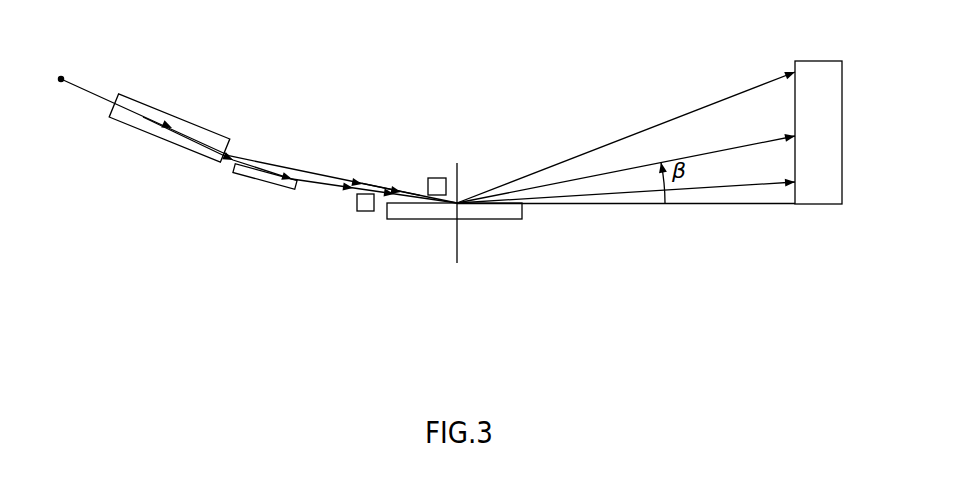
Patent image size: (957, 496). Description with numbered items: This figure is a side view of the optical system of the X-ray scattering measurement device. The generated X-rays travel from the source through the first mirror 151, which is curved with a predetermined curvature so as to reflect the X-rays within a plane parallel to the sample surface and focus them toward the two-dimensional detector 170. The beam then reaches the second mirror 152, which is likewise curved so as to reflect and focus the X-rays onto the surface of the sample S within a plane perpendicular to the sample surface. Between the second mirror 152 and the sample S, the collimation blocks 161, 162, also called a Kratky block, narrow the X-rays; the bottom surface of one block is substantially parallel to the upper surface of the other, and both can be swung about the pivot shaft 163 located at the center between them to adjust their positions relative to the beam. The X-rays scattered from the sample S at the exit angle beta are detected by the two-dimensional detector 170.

The first mirror 151 is at (173, 113).
The second mirror 152 is at (265, 185).
The collimation block 161 is at (363, 213).
The collimation block 162 is at (437, 177).
The pivot shaft 163 is at (404, 191).
The sample S is at (432, 222).
The two-dimensional detector 170 is at (818, 60).